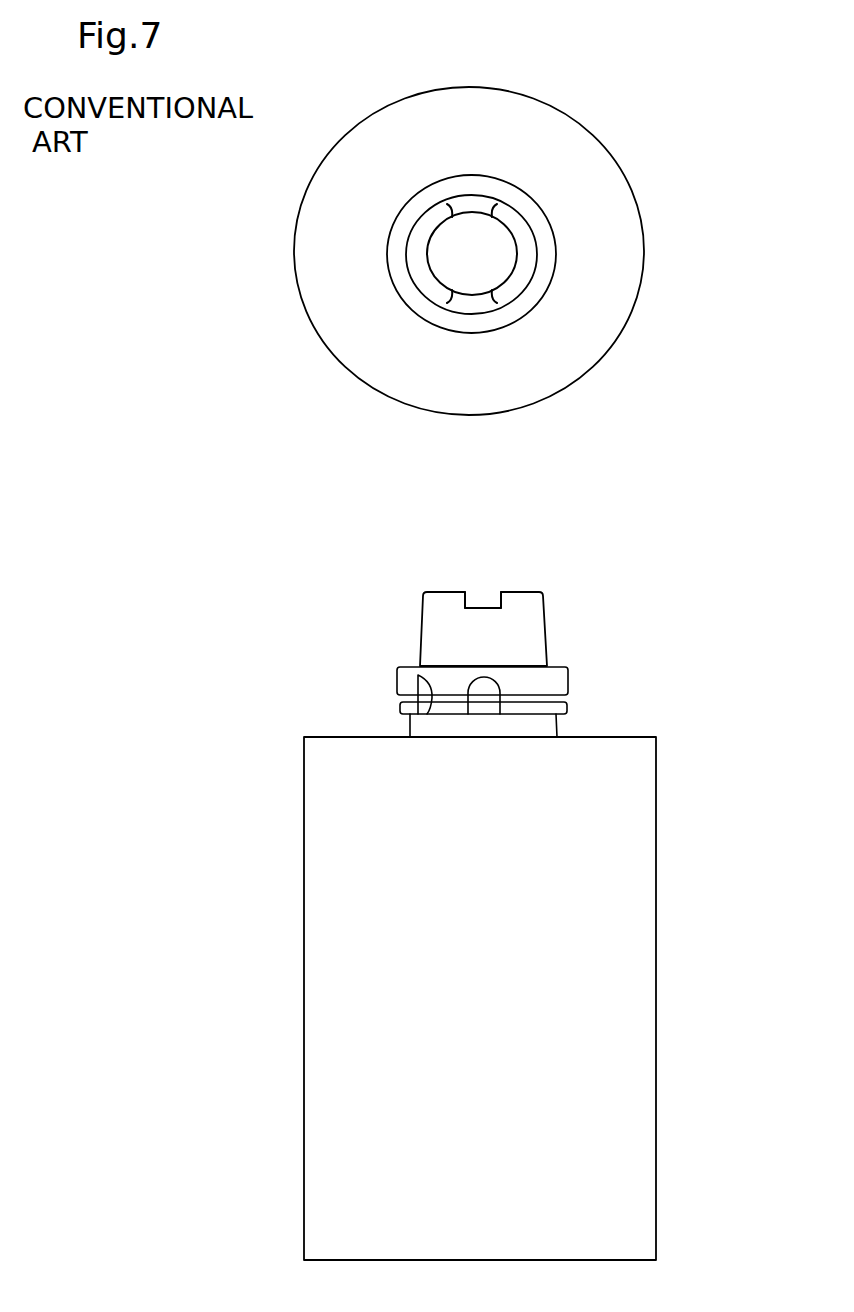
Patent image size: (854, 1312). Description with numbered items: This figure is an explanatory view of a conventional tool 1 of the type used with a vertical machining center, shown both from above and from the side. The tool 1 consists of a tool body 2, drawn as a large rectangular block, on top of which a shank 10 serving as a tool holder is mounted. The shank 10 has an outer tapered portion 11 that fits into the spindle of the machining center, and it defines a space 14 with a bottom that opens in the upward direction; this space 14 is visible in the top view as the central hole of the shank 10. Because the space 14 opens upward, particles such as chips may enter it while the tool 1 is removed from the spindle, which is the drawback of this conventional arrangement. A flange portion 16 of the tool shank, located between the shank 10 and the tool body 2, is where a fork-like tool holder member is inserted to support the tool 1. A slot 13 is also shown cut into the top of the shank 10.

The tool 1 is at (712, 800).
The tool body 2 is at (620, 312).
The shank 10 is at (522, 252).
The outer tapered portion 11 is at (547, 607).
The slot 13 is at (476, 205).
The space 14 is at (497, 243).
The flange portion 16 is at (400, 705).